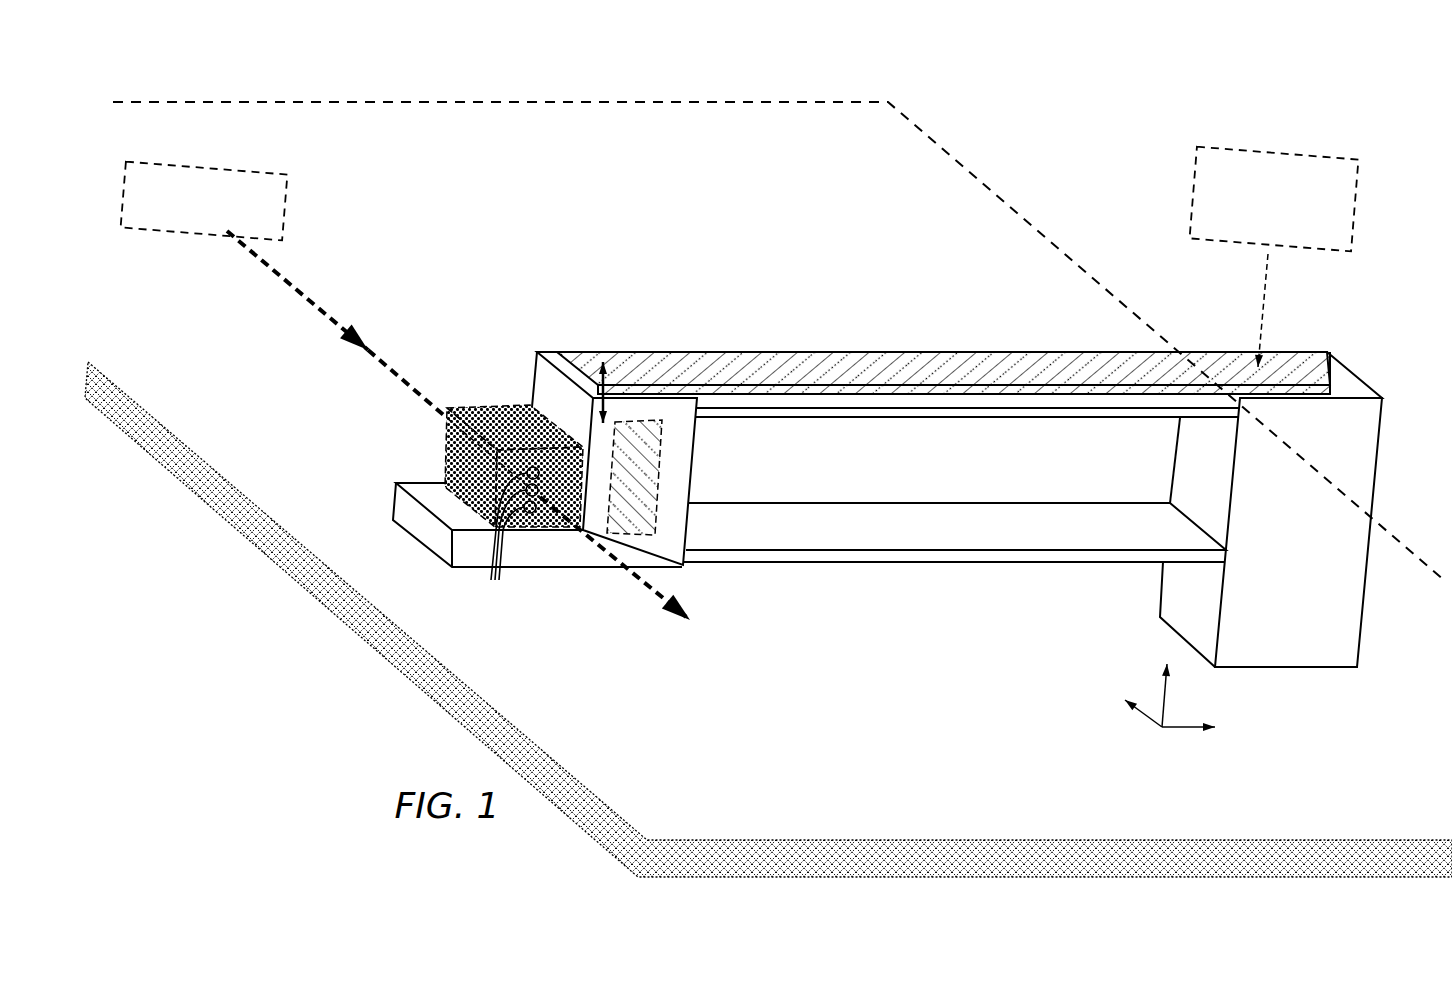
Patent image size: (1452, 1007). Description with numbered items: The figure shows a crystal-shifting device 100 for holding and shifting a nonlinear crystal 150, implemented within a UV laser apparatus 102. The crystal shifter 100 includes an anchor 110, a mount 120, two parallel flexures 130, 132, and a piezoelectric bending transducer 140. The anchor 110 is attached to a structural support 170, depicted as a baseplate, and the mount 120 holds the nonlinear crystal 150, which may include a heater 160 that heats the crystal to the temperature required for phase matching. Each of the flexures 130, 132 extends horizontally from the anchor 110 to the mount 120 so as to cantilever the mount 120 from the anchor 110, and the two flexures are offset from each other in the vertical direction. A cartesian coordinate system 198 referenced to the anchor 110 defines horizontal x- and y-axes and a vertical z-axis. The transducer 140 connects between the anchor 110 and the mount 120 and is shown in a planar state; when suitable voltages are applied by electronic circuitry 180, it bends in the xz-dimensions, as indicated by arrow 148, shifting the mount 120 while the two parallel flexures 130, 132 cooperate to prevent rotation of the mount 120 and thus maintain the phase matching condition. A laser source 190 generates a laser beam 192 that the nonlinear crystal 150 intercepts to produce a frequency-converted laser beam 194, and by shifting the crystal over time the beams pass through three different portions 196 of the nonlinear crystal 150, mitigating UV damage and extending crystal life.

The crystal-shifting device 100 is at (533, 303).
The UV laser apparatus 102 is at (1346, 62).
The anchor 110 is at (1275, 587).
The mount 120 is at (534, 558).
The flexure 130 is at (880, 538).
The flexure 132 is at (937, 422).
The piezoelectric bending transducer 140 is at (926, 378).
The arrow 148 is at (617, 378).
The nonlinear crystal 150 is at (453, 480).
The heater 160 is at (616, 495).
The structural support 170 is at (660, 823).
The electronic circuitry 180 is at (1274, 257).
The laser source 190 is at (204, 201).
The laser beam 192 is at (307, 297).
The frequency-converted laser beam 194 is at (628, 577).
The portions of nonlinear crystal 196 is at (506, 539).
The cartesian coordinate system 198 is at (1120, 718).